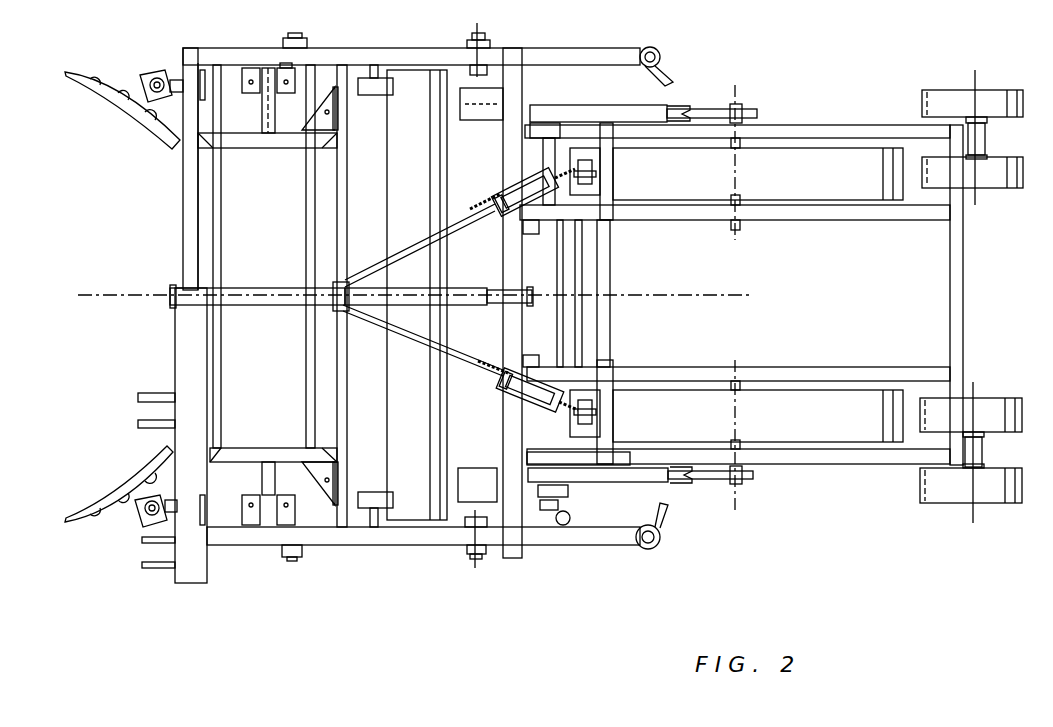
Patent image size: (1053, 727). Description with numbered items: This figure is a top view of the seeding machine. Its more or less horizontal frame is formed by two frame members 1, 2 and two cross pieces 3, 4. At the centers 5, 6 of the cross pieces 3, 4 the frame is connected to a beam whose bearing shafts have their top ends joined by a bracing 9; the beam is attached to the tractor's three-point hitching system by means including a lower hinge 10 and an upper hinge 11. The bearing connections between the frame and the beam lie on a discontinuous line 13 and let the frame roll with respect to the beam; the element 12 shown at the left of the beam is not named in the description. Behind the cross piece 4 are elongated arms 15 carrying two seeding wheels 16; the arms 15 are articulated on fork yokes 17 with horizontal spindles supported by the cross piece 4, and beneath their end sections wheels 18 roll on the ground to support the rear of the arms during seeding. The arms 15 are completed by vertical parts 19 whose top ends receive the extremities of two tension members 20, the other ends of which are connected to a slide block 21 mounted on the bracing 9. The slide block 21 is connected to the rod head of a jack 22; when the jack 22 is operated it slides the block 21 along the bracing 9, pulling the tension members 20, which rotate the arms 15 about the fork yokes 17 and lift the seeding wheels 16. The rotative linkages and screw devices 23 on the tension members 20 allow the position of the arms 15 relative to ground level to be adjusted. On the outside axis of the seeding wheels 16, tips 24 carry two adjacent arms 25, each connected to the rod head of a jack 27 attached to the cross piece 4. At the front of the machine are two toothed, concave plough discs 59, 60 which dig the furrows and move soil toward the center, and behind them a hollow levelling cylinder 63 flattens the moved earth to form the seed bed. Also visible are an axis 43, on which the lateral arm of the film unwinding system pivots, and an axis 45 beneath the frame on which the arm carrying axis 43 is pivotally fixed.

The frame member 1 is at (376, 545).
The frame member 2 is at (376, 48).
The cross piece 3 is at (183, 193).
The cross piece 4 is at (522, 275).
The center of cross piece 5 is at (207, 284).
The center of cross piece 6 is at (497, 283).
The bracing 9 is at (258, 290).
The lower hinge 10 is at (138, 424).
The upper hinge 11 is at (142, 565).
The lower left upright 12 is at (175, 336).
The discontinuous line 13 is at (103, 293).
The elongated arms 15 is at (808, 125).
The seeding wheels 16 is at (818, 180).
The fork yokes 17 is at (532, 234).
The wheels 18 is at (1000, 180).
The vertical parts 19 is at (613, 175).
The tension members 20 is at (470, 213).
The slide block 21 is at (335, 302).
The jack 22 is at (410, 288).
The screw devices 23 is at (510, 182).
The tips 24 is at (738, 103).
The adjacent arms 25 is at (703, 107).
The jack 27 is at (605, 105).
The axis 43 is at (474, 560).
The axis 45 is at (297, 557).
The plough disc 59 is at (105, 490).
The plough disc 60 is at (130, 118).
The levelling cylinder 63 is at (243, 438).